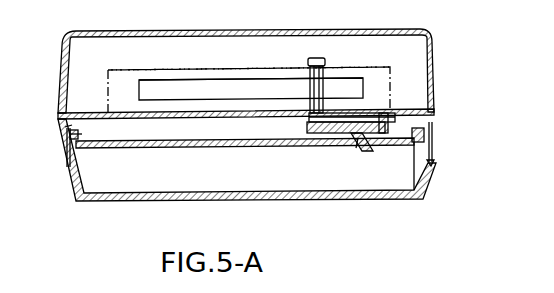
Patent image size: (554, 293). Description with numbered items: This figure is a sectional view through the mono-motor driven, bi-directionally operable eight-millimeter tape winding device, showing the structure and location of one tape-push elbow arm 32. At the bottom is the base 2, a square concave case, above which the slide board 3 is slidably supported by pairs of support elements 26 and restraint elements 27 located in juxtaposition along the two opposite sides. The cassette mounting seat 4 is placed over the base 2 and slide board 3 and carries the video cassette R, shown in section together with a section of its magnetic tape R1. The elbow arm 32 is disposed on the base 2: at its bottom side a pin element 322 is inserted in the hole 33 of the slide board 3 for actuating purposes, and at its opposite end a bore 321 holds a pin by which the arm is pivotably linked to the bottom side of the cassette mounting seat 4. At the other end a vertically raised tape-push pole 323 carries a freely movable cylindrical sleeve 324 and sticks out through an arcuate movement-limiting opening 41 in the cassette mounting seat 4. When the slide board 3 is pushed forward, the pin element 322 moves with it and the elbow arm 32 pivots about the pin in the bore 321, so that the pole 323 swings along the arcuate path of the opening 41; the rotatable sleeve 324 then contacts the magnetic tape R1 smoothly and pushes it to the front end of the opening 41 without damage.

The base 2 is at (178, 201).
The slide board 3 is at (236, 146).
The cassette mounting seat 4 is at (208, 110).
The support elements 26 is at (62, 128).
The restraint elements 27 is at (72, 134).
The tape-push elbow arm 32 is at (333, 130).
The hole 33 is at (350, 146).
The arcuate movement-limiting opening 41 is at (357, 109).
The bore 321 is at (387, 124).
The pin element 322 is at (367, 143).
The tape-push pole 323 is at (309, 76).
The cylindrical sleeve 324 is at (251, 89).
The 8-mm video cassette R is at (250, 70).
The magnetic tape R1 is at (353, 78).